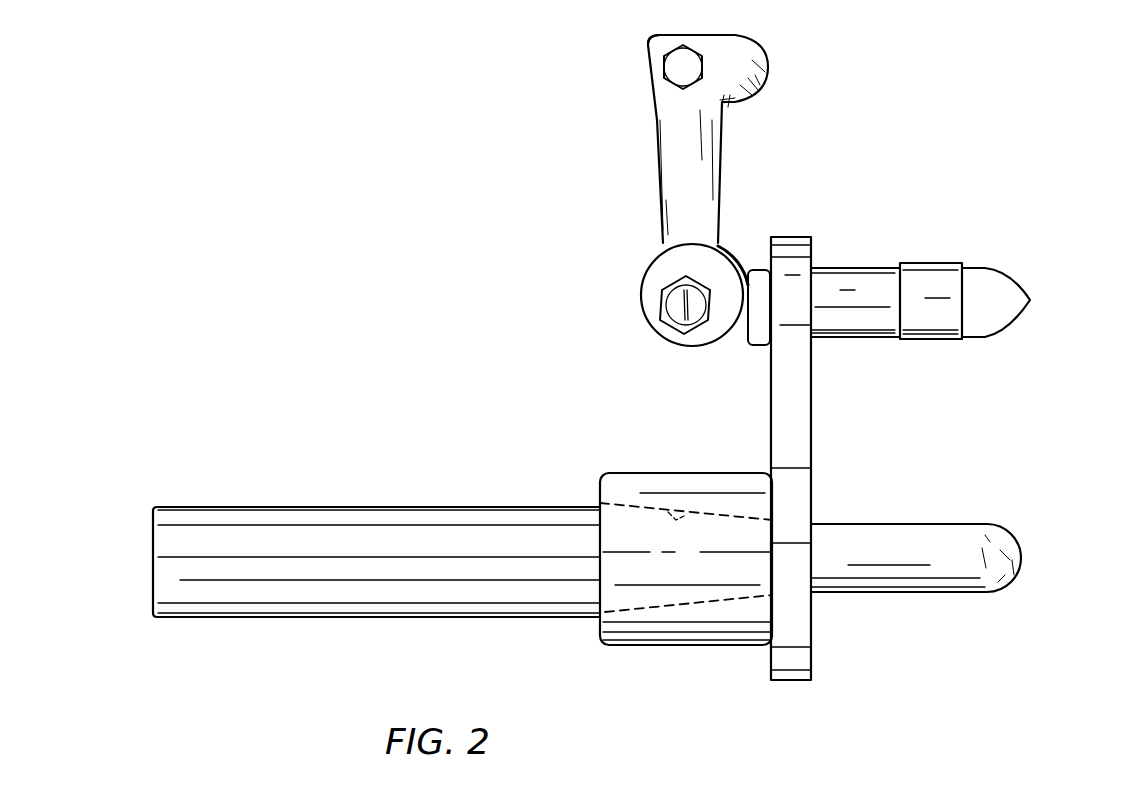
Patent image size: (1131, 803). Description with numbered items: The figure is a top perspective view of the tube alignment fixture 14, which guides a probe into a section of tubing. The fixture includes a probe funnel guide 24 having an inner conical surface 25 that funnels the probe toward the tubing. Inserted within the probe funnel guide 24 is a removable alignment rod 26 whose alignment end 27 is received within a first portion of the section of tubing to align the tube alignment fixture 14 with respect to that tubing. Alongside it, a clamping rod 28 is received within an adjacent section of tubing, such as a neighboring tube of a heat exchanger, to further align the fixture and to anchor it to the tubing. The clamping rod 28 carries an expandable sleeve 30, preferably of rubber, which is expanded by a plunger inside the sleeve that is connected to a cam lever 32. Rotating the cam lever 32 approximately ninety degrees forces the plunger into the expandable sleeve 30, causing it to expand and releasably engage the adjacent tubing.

The tube alignment fixture 14 is at (1040, 500).
The probe funnel guide 24 is at (612, 473).
The inner conical surface 25 is at (688, 515).
The removable alignment rod 26 is at (400, 507).
The alignment end 27 is at (915, 524).
The clamping rod 28 is at (1022, 314).
The expandable sleeve 30 is at (921, 263).
The cam lever 32 is at (655, 172).